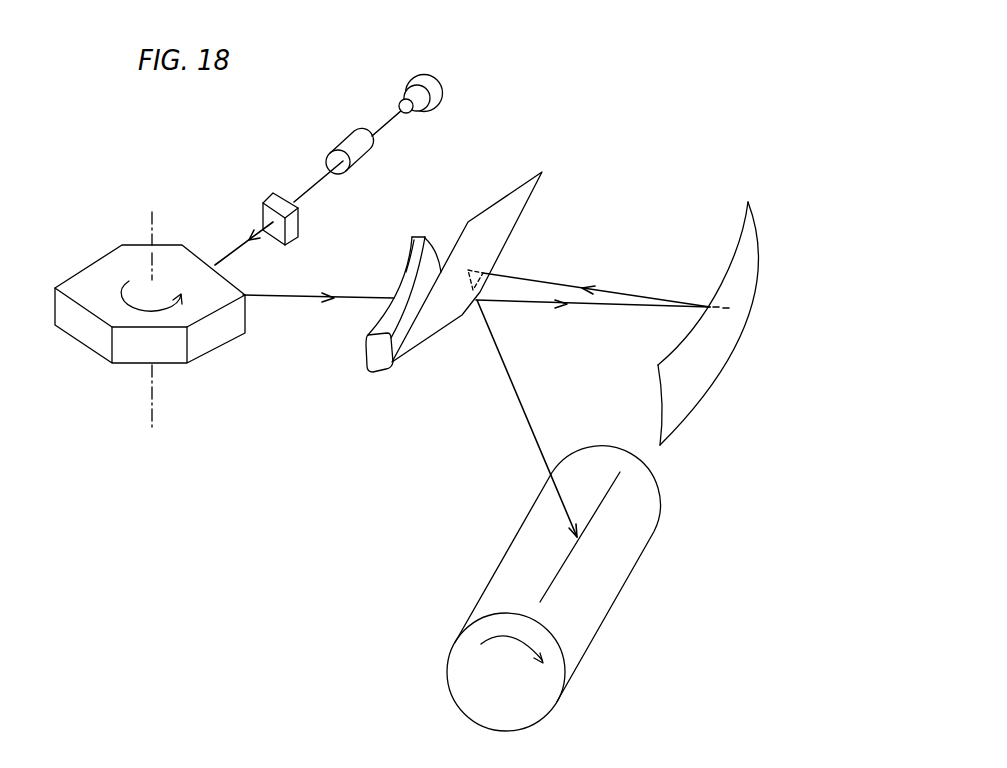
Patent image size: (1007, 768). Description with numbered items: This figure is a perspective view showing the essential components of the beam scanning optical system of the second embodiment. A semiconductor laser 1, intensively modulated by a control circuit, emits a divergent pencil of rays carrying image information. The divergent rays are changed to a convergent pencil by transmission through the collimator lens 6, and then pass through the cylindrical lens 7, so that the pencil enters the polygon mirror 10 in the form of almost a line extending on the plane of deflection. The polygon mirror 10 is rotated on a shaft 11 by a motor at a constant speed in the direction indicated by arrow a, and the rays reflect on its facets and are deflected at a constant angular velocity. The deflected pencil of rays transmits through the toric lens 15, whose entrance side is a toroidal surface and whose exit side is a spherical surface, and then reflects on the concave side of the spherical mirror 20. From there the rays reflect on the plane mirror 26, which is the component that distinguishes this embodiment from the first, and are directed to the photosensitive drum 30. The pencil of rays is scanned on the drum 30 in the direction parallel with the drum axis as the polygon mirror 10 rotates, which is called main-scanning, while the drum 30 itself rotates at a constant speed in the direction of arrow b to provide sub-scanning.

The semiconductor laser 1 is at (413, 74).
The collimator lens 6 is at (343, 137).
The cylindrical lens 7 is at (272, 193).
The polygon mirror 10 is at (83, 347).
The shaft 11 is at (153, 228).
The toric lens 15 is at (370, 373).
The spherical mirror 20 is at (725, 270).
The plane mirror 26 is at (530, 207).
The photosensitive drum 30 is at (637, 570).